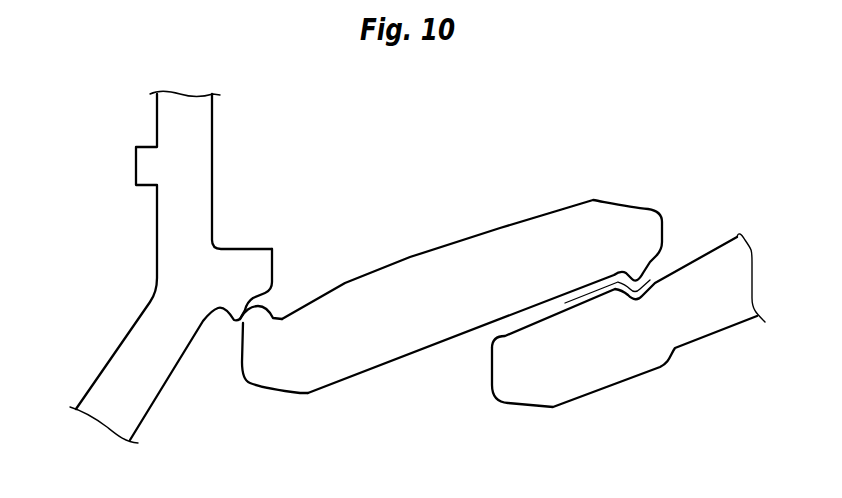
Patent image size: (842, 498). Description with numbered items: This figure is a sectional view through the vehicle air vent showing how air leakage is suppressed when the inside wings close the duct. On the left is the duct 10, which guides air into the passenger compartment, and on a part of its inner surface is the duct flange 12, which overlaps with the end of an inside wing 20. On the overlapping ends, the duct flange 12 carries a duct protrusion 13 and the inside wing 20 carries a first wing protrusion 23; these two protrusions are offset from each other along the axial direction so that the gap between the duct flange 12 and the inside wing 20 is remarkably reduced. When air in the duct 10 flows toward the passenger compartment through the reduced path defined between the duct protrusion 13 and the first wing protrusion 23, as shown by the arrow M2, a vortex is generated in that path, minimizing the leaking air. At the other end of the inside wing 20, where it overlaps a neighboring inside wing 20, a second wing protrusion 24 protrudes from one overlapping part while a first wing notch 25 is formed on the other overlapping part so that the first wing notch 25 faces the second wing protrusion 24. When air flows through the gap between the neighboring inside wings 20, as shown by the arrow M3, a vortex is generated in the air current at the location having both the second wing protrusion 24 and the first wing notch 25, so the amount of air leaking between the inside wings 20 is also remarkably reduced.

The duct 10 is at (168, 125).
The duct flange 12 is at (247, 257).
The duct protrusion 13 is at (212, 325).
The inside wing 20 is at (445, 325).
The first wing protrusion 23 is at (258, 315).
The second wing protrusion 24 is at (635, 278).
The first wing notch 25 is at (620, 300).
The arrow M2 is at (214, 368).
The arrow M3 is at (650, 280).